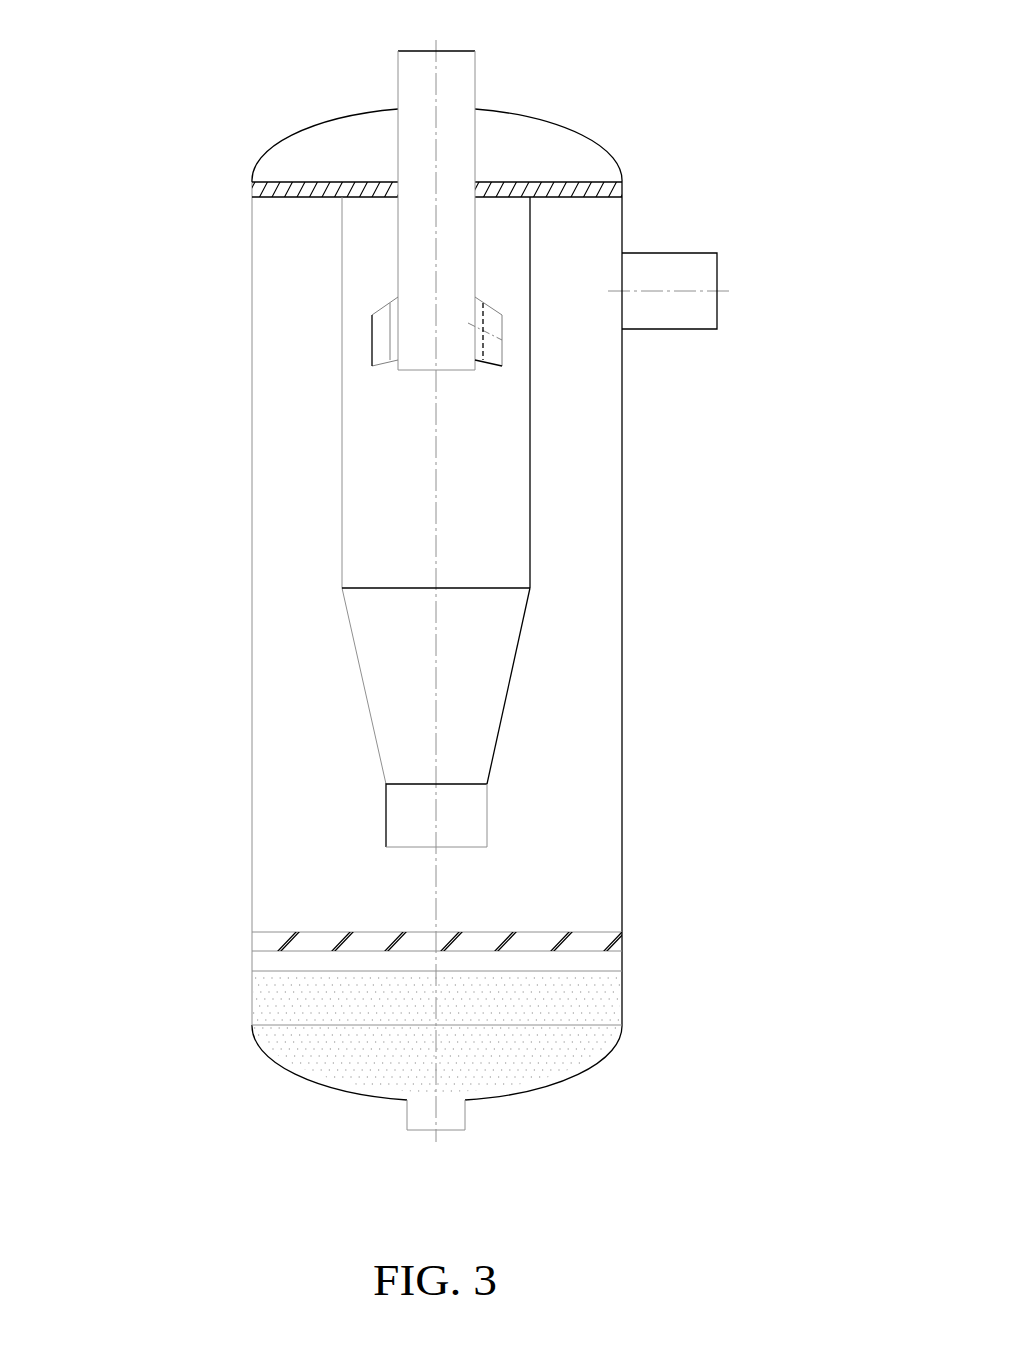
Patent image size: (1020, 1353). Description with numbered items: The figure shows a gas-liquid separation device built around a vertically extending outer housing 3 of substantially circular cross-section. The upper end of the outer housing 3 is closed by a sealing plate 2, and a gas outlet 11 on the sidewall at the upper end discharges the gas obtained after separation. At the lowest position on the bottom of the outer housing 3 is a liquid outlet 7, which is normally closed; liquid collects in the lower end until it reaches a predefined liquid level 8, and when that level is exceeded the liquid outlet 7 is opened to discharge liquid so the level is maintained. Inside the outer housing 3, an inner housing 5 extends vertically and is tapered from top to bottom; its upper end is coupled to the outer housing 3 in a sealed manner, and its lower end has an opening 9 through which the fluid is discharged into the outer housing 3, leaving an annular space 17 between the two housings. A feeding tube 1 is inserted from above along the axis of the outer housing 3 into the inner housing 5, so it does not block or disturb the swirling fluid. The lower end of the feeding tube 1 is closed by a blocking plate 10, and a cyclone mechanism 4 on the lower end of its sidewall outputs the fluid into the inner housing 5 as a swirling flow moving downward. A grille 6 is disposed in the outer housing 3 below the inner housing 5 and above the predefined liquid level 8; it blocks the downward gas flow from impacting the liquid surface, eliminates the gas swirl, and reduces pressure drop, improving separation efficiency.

The feeding tube 1 is at (398, 80).
The sealing plate 2 is at (308, 183).
The outer housing 3 is at (252, 267).
The cyclone mechanism 4 is at (404, 325).
The inner housing 5 is at (342, 450).
The grille 6 is at (338, 943).
The liquid outlet 7 is at (455, 1119).
The predefined liquid level 8 is at (585, 1005).
The opening 9 is at (470, 828).
The blocking plate 10 is at (436, 370).
The gas outlet 11 is at (650, 311).
The annular space 17 is at (560, 639).